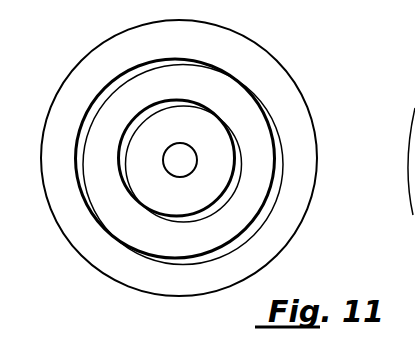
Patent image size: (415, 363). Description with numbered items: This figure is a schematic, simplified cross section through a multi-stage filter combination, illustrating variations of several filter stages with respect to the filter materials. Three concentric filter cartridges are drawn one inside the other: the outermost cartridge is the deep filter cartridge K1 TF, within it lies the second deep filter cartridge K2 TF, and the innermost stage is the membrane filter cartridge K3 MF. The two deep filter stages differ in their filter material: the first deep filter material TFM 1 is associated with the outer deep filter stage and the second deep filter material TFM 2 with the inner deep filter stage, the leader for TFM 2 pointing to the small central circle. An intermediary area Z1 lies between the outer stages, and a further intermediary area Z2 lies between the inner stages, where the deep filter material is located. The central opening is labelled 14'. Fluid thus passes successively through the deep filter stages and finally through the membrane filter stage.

The cartridge 1, deep filter K1 TF is at (202, 50).
The cartridge 2, deep filter K2 TF is at (202, 92).
The cartridge 3, membrane filter K3 MF is at (202, 138).
The deep filter material 1 TFM 1 is at (245, 77).
The intermediary area Z1 is at (260, 100).
The zone 2 Z2 is at (233, 135).
The bore 14' is at (240, 163).
The deep filter material 2 TFM 2 is at (197, 160).